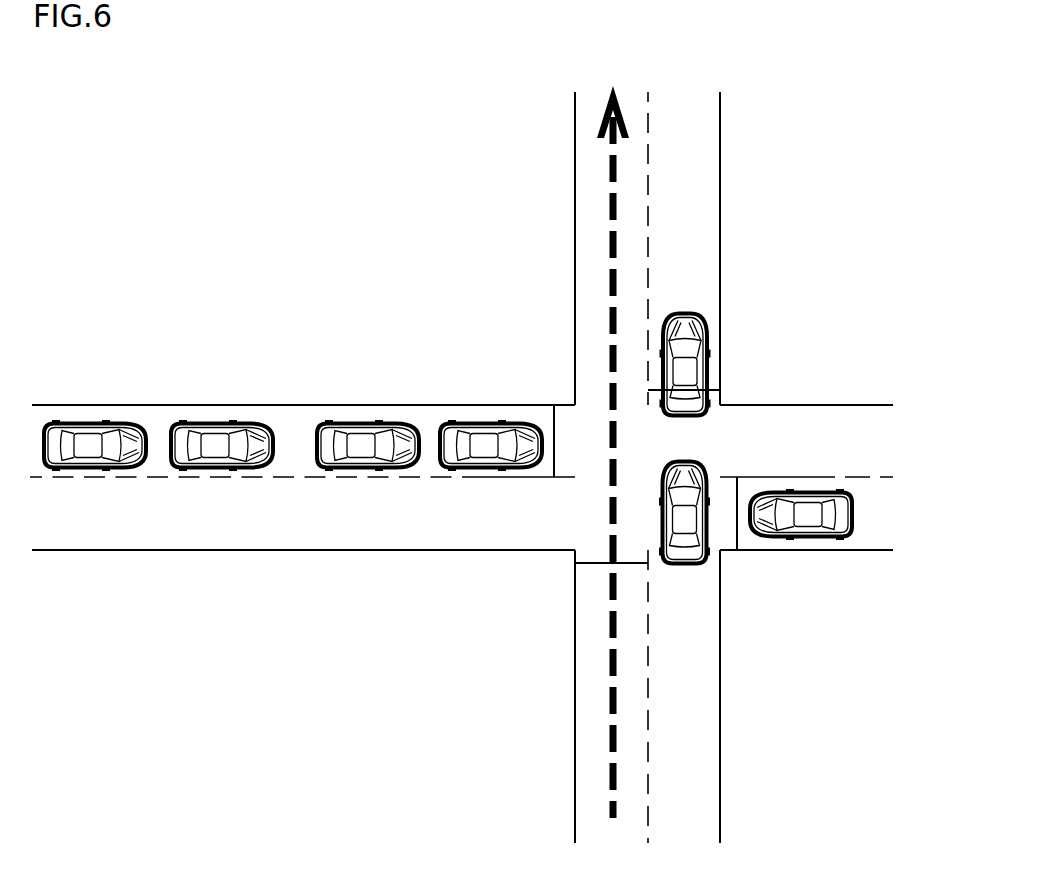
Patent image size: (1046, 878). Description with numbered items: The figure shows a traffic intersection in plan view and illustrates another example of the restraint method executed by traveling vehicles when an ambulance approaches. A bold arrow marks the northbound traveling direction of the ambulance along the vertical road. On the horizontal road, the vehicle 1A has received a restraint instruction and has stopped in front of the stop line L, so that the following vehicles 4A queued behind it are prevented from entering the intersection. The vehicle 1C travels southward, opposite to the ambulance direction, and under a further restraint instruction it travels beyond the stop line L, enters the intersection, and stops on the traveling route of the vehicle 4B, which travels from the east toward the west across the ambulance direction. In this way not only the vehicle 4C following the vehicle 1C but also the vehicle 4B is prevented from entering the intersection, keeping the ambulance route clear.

The vehicle 4A is at (88, 423).
The vehicle 1A is at (482, 423).
The stop line L is at (554, 442).
The vehicle 4C is at (707, 358).
The vehicle 1C is at (707, 523).
The vehicle 4B is at (822, 538).